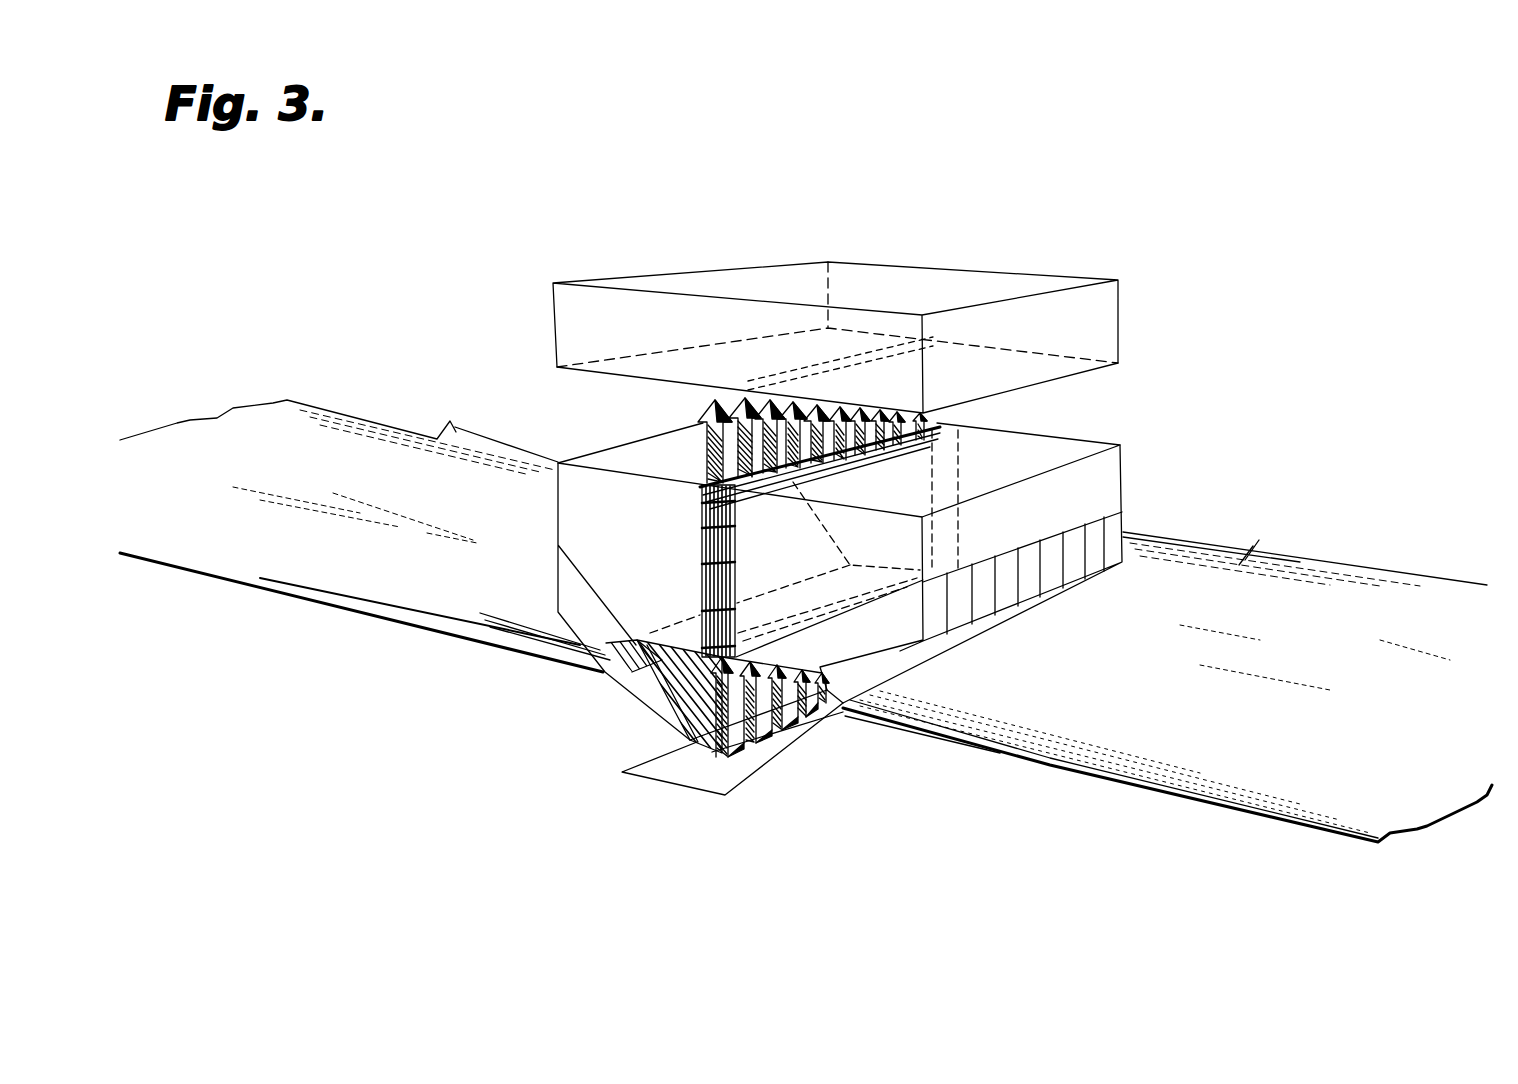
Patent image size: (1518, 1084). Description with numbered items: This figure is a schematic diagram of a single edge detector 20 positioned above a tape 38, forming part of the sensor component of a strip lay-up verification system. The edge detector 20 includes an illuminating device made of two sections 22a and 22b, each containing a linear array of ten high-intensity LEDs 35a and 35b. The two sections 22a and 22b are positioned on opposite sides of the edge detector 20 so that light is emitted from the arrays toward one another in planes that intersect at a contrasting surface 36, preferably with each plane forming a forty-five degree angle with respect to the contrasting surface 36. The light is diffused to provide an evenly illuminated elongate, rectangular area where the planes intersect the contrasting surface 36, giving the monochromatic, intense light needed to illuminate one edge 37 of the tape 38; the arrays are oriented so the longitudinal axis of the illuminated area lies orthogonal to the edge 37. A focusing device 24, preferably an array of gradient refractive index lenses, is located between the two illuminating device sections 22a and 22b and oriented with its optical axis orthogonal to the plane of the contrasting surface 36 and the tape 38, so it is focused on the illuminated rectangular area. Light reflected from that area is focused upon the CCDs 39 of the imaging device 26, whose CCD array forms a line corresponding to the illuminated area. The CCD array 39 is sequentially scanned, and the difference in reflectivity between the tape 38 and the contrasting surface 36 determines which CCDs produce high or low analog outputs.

The edge detector 20 is at (483, 329).
The illuminating device section 22a is at (575, 620).
The illuminating device section 22b is at (857, 680).
The focusing device 24 is at (707, 620).
The imaging device 26 is at (870, 277).
The high-intensity LEDs 35a is at (560, 578).
The high-intensity LEDs 35b is at (1008, 593).
The contrasting surface 36 is at (697, 778).
The edge 37 is at (353, 610).
The tape 38 is at (277, 577).
The CCDs 39 is at (697, 401).